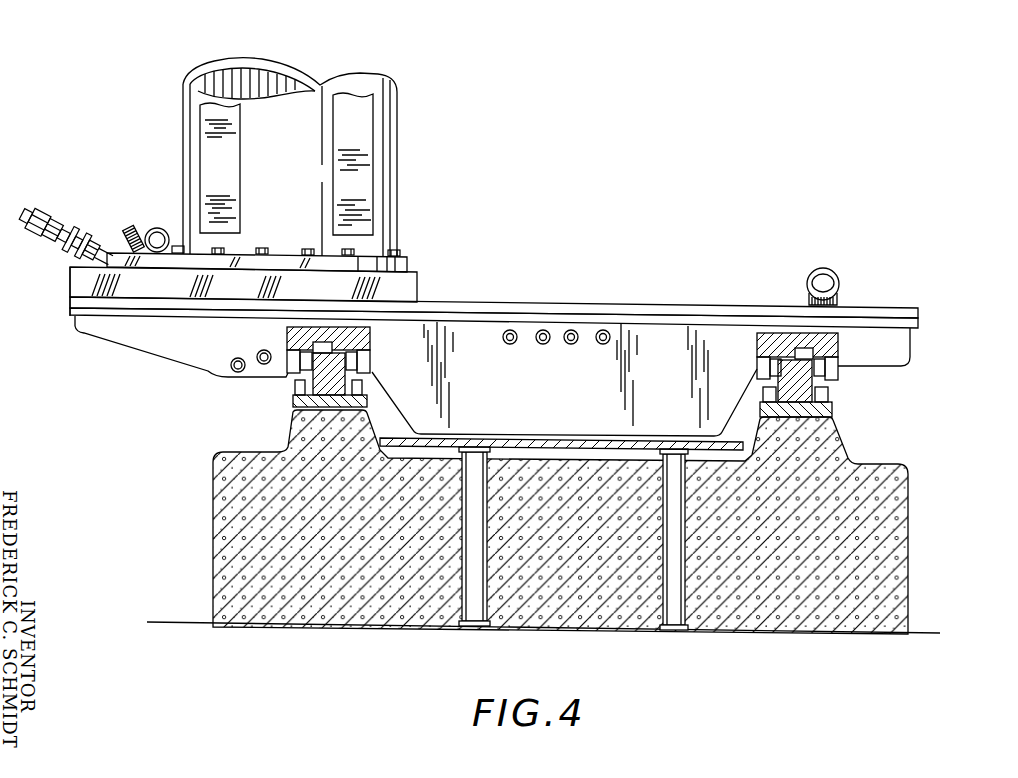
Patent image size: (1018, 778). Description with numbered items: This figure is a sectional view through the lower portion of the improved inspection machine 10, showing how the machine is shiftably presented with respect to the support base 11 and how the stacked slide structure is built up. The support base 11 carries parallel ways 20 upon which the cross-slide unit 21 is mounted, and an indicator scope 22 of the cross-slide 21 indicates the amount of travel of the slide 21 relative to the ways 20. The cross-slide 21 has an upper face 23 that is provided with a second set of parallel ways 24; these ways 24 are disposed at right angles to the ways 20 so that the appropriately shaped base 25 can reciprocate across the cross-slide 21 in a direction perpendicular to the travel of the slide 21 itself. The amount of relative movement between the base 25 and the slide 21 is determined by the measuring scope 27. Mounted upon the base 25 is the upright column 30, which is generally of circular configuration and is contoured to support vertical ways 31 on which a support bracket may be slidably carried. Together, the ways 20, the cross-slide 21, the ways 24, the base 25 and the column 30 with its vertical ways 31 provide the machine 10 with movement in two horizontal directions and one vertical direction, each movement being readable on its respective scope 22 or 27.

The inspection machine 10 is at (278, 165).
The support base 11 is at (213, 576).
The parallel ways 20 is at (320, 388).
The cross-slide unit 21 is at (534, 395).
The indicator scope 22 is at (840, 278).
The upper face 23 is at (503, 308).
The parallel ways 24 is at (586, 308).
The base 25 is at (417, 292).
The measuring scope 27 is at (135, 228).
The upright column 30 is at (396, 136).
The vertical ways 31 is at (343, 126).